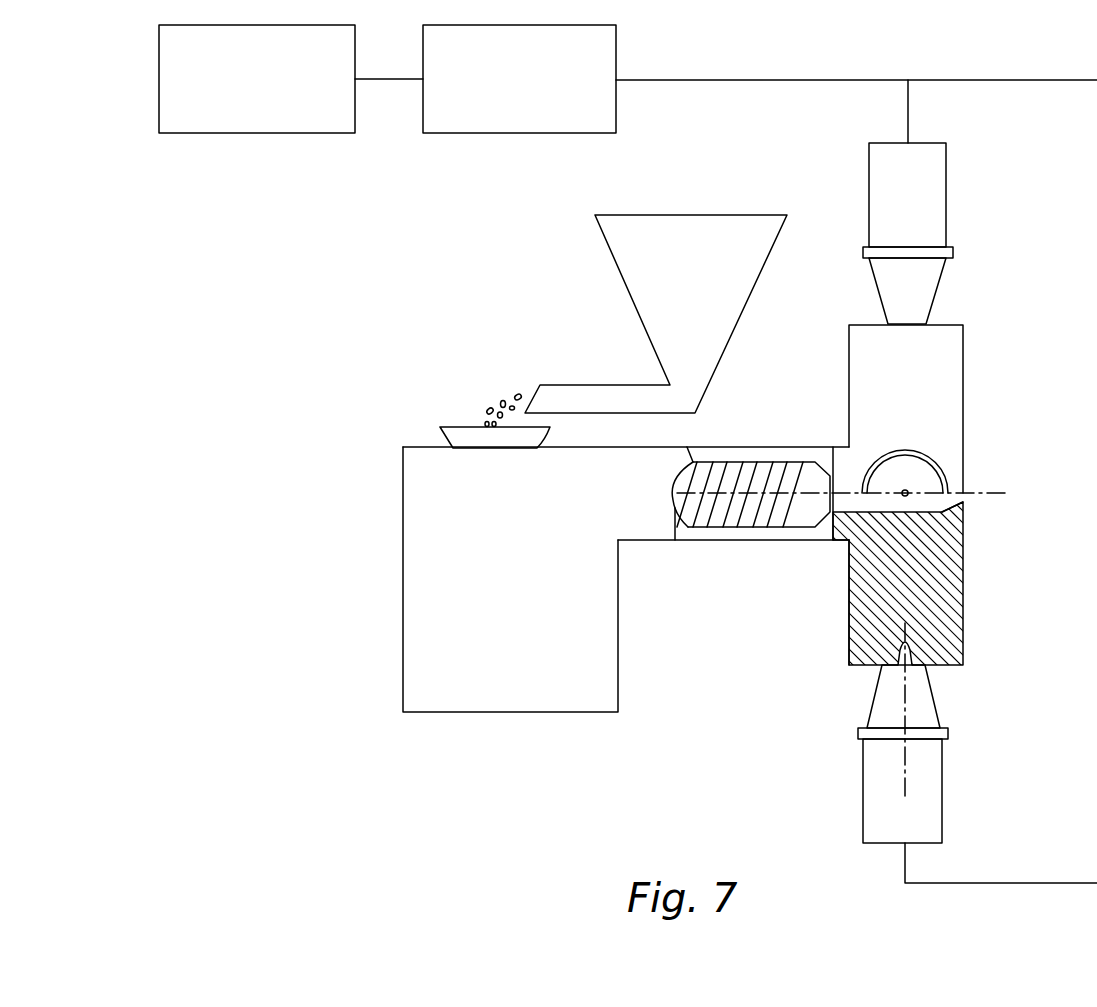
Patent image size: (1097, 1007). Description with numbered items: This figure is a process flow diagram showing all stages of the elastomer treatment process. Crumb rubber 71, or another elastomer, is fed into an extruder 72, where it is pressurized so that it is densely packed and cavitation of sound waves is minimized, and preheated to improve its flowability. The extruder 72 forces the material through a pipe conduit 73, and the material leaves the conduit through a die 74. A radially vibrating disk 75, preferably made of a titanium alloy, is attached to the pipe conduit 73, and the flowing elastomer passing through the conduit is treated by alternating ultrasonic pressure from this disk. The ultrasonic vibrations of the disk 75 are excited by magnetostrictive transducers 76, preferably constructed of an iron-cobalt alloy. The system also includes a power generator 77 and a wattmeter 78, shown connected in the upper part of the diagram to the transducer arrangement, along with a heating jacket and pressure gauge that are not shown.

The crumb rubber 71 is at (505, 392).
The extruder 72 is at (510, 579).
The pipe conduit 73 is at (908, 490).
The die 74 is at (963, 513).
The radially vibrating disk 75 is at (945, 568).
The magnetostrictive transducers 76 is at (919, 288).
The power generator 77 is at (257, 79).
The wattmeter 78 is at (519, 79).